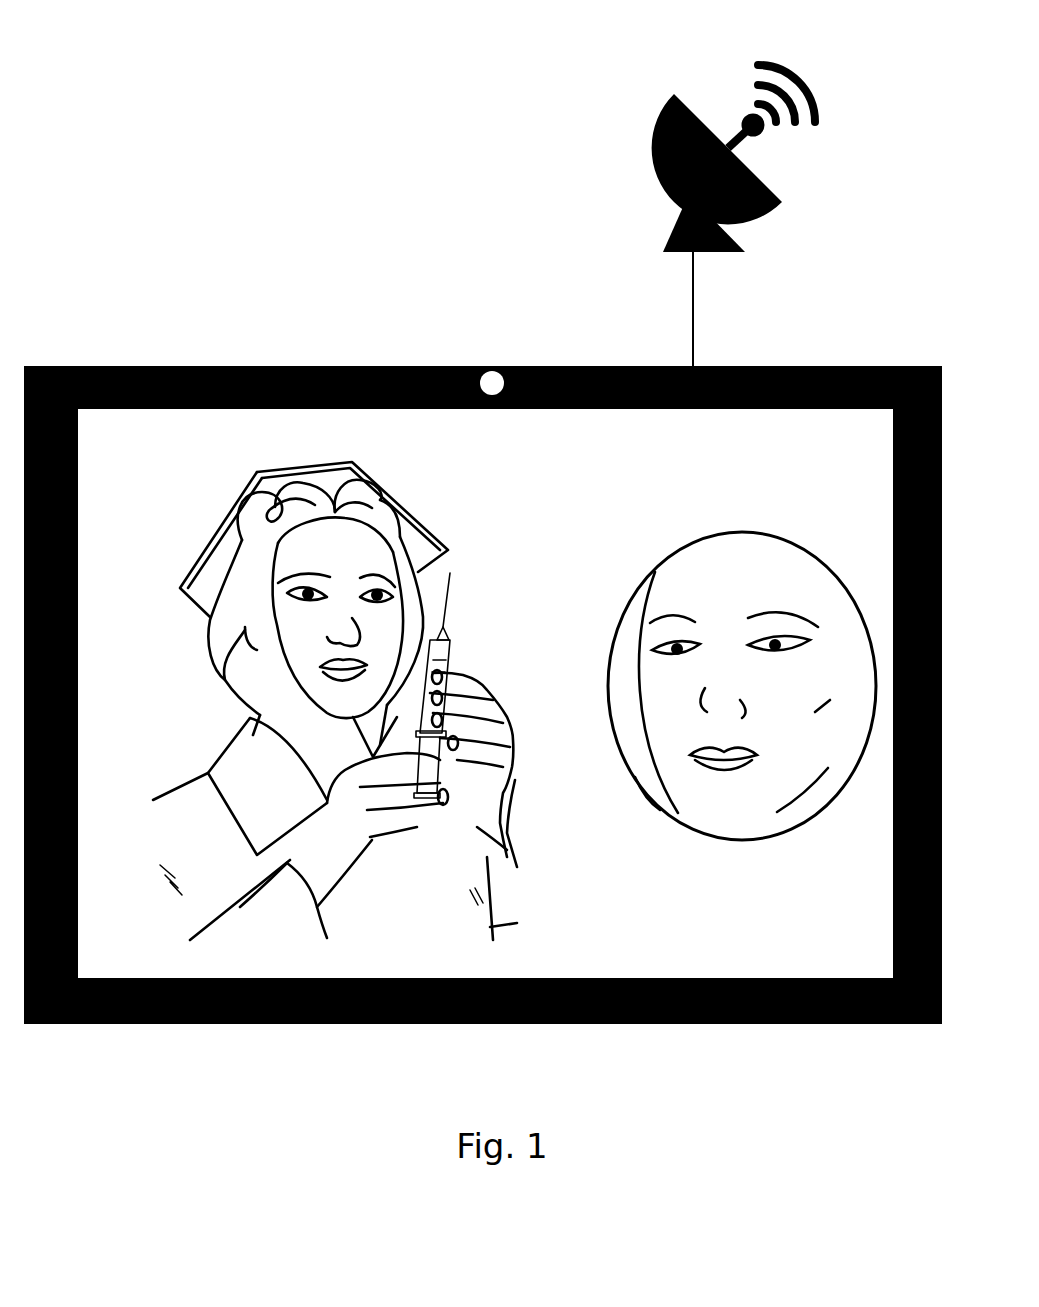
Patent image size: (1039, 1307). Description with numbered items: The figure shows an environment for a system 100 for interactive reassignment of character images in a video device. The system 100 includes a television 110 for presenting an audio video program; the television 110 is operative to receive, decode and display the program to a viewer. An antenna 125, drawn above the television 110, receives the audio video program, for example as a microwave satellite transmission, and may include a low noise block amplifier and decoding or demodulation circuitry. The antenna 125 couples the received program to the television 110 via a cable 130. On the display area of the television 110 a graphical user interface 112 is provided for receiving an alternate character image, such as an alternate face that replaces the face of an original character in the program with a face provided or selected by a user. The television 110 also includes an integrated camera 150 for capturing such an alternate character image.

The system 100 is at (546, 42).
The television 110 is at (238, 357).
The graphical user interface 112 is at (755, 855).
The antenna 125 is at (636, 142).
The cable 130 is at (705, 283).
The integrated camera 150 is at (473, 357).